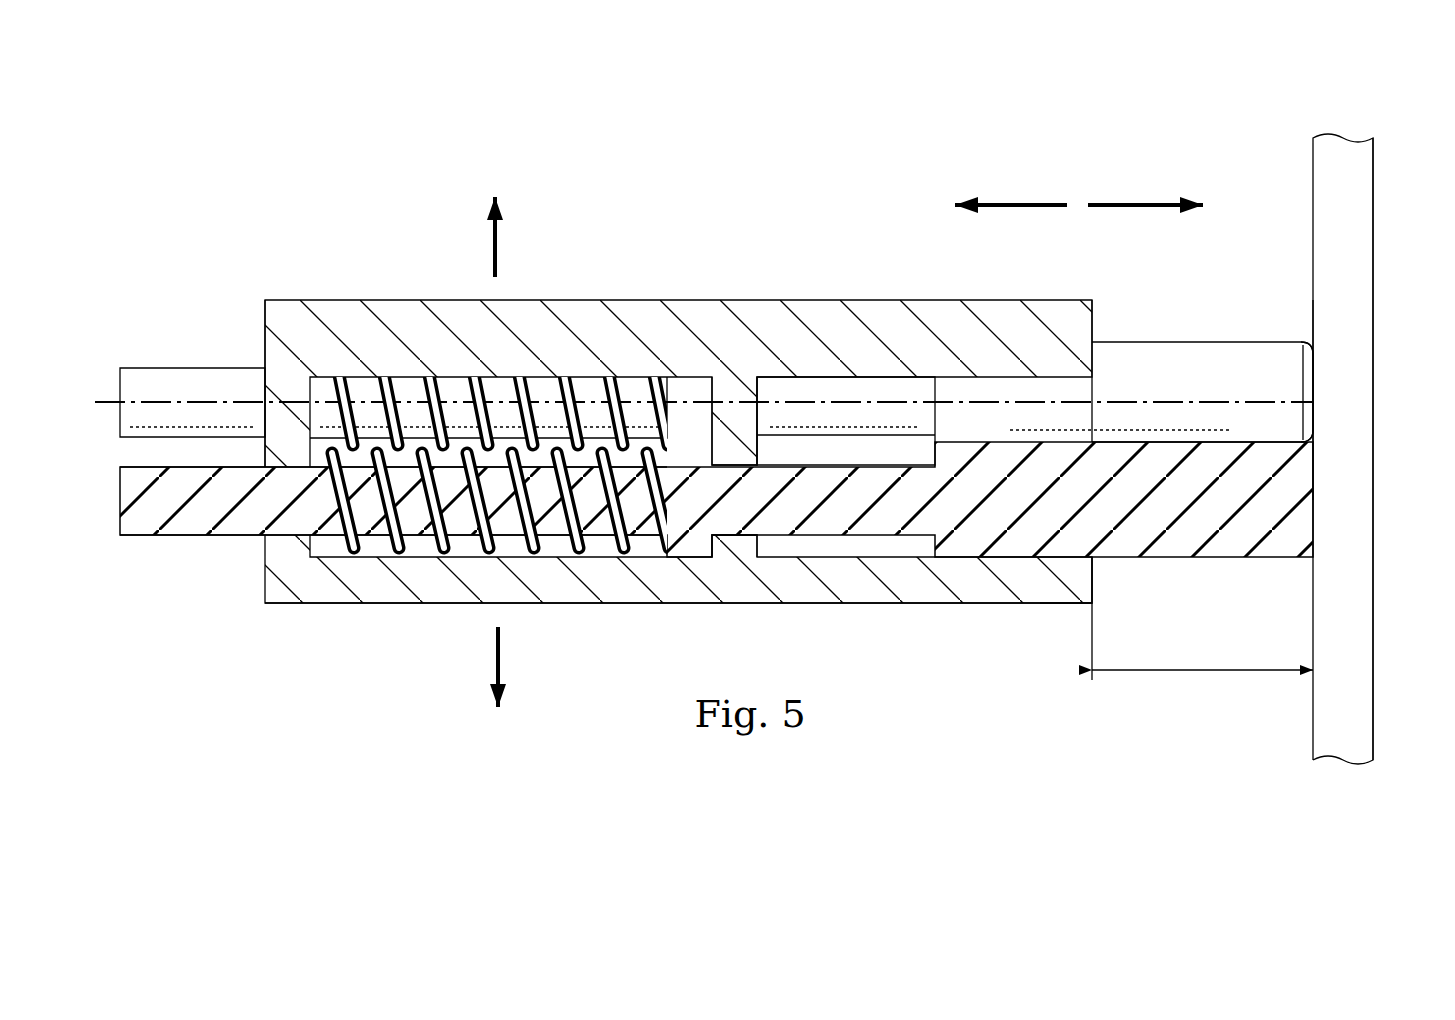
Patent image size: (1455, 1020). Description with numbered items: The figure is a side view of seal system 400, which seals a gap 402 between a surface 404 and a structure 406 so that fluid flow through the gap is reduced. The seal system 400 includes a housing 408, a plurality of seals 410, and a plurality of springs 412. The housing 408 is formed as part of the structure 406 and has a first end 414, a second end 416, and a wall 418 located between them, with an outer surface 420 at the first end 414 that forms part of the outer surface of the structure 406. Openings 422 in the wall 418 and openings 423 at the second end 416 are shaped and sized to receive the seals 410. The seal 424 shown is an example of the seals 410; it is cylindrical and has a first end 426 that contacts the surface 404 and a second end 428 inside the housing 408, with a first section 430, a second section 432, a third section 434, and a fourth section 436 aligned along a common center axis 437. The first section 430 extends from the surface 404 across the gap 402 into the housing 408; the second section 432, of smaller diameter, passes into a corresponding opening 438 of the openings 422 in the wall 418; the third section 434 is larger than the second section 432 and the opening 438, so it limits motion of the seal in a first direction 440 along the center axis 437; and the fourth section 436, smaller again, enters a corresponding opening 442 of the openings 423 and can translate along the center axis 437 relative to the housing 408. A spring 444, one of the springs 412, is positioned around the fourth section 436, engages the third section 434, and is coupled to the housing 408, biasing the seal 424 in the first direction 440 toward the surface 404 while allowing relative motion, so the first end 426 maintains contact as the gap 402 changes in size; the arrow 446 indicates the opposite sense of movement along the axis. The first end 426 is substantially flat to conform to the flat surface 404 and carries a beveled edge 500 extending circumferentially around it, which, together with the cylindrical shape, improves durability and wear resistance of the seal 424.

The seal system 400 is at (745, 125).
The gap 402 is at (1205, 672).
The surface 404 is at (1313, 715).
The structure 406 is at (628, 255).
The housing 408 is at (340, 300).
The seals 410 is at (1212, 568).
The springs 412 is at (415, 555).
The first end 414 is at (1080, 615).
The second end 416 is at (258, 302).
The wall 418 is at (717, 377).
The outer surface 420 is at (1092, 320).
The openings in wall 422 is at (735, 525).
The openings at second end 423 is at (273, 520).
The seal 424 is at (1257, 342).
The first end 426 is at (1315, 402).
The second end 428 is at (160, 345).
The first section 430 is at (1150, 325).
The second section 432 is at (897, 387).
The third section 434 is at (684, 378).
The fourth section 436 is at (645, 378).
The center axis 437 is at (1183, 398).
The opening 438 is at (765, 410).
The first direction 440 is at (1138, 200).
The opening 442 is at (330, 380).
The spring 444 is at (385, 377).
The retraction direction 446 is at (1020, 200).
The beveled edge 500 is at (1313, 340).